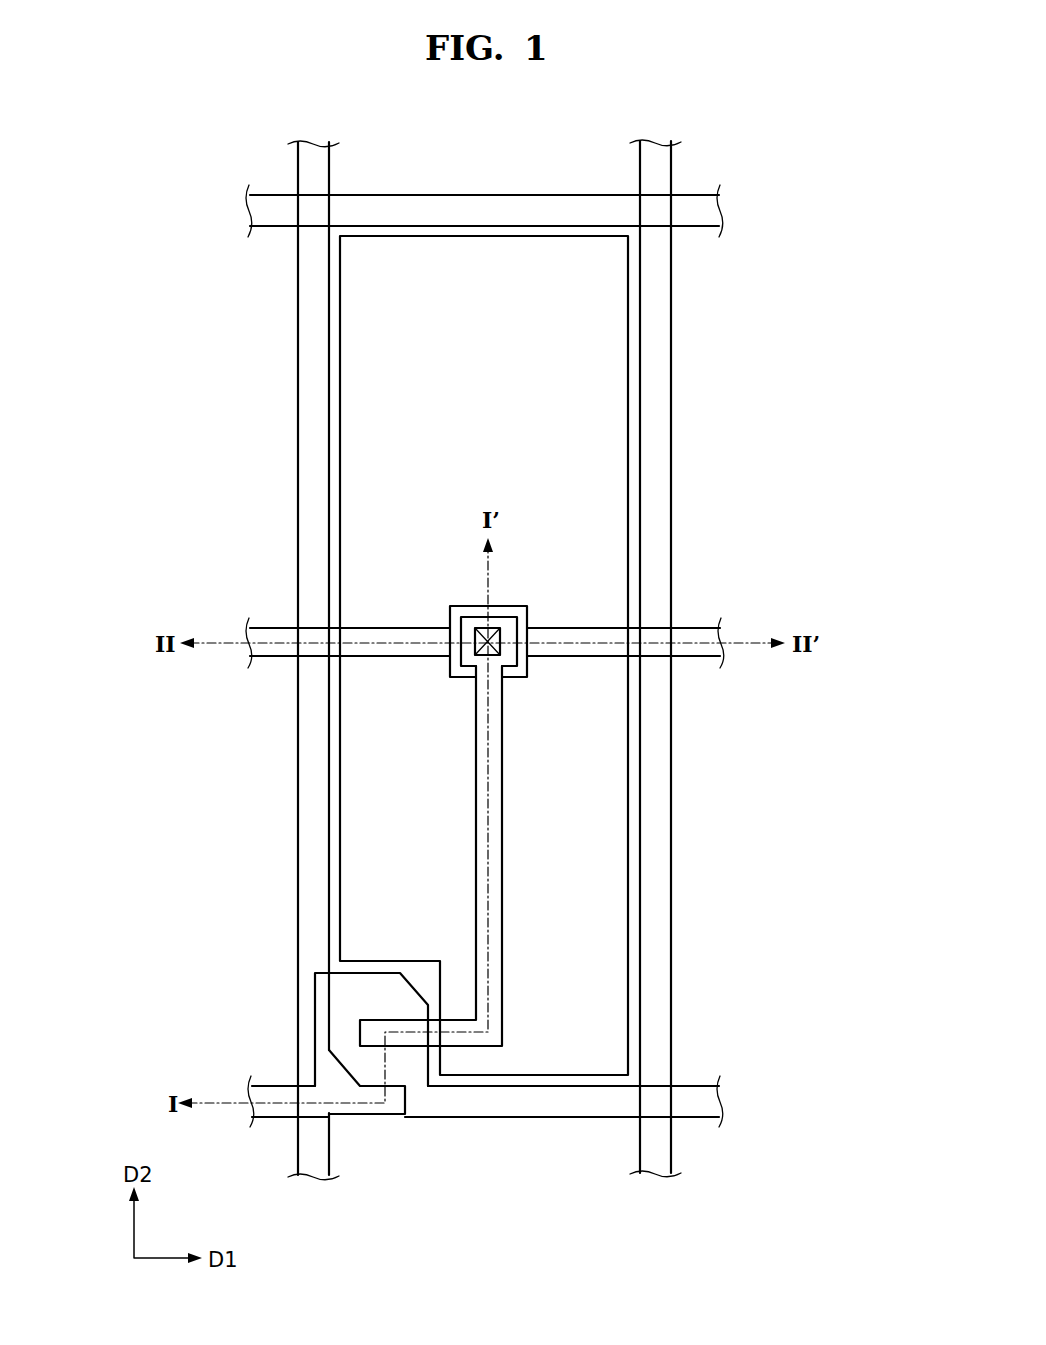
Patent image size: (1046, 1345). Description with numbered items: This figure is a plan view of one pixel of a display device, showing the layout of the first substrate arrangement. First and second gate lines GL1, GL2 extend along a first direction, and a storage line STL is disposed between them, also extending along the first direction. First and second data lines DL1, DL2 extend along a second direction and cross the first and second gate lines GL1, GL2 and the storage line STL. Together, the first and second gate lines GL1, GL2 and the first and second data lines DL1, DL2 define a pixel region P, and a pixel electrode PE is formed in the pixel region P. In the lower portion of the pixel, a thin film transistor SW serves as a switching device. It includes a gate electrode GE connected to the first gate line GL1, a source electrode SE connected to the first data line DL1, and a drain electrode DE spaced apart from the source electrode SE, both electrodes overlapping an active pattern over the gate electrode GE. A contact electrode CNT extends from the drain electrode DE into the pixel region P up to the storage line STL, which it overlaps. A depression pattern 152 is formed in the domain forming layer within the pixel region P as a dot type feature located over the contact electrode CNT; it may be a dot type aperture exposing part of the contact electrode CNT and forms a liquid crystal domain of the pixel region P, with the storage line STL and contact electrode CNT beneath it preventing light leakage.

The first data line DL1 is at (305, 984).
The second data line DL2 is at (658, 985).
The first gate line GL1 is at (607, 1110).
The second gate line GL2 is at (484, 203).
The storage line STL is at (273, 637).
The pixel region P is at (484, 279).
The pixel electrode PE is at (605, 840).
The depression pattern 152 is at (500, 629).
The contact electrode CNT is at (512, 663).
The source electrode SE is at (395, 1110).
The gate electrode GE is at (413, 1061).
The drain electrode DE is at (468, 1047).
The thin film transistor SW is at (495, 1188).